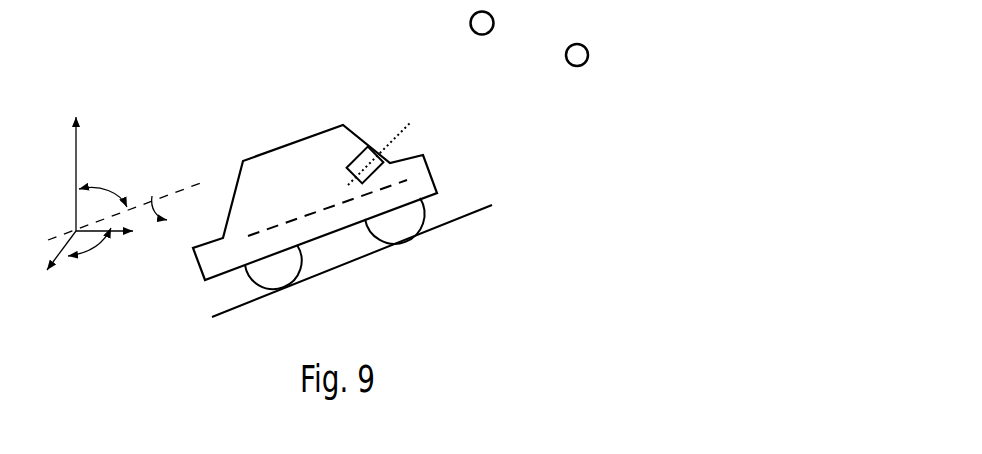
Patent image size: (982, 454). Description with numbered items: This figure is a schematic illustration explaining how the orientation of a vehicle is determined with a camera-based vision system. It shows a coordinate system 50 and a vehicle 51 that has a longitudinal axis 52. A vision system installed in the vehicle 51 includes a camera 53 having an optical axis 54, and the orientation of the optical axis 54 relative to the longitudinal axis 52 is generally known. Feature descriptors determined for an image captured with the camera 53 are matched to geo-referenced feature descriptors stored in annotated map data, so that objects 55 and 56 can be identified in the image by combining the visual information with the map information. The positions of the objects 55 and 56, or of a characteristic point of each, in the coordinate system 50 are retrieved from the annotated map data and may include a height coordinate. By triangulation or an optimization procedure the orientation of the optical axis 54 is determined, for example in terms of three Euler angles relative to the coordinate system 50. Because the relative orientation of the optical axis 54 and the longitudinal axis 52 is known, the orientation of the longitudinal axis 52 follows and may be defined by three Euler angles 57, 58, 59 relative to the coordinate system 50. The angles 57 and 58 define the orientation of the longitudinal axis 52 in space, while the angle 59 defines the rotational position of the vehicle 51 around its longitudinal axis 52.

The coordinate system 50 is at (76, 130).
The vehicle 51 is at (434, 183).
The longitudinal axis 52 is at (294, 223).
The camera 53 is at (347, 167).
The optical axis 54 is at (400, 132).
The object 55 is at (588, 53).
The object 56 is at (493, 19).
The Euler angle 57 is at (98, 187).
The Euler angle 58 is at (98, 247).
The Euler angle 59 is at (155, 199).